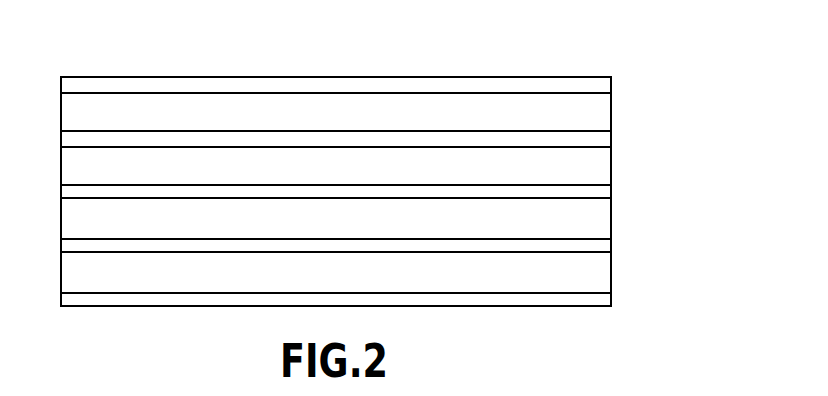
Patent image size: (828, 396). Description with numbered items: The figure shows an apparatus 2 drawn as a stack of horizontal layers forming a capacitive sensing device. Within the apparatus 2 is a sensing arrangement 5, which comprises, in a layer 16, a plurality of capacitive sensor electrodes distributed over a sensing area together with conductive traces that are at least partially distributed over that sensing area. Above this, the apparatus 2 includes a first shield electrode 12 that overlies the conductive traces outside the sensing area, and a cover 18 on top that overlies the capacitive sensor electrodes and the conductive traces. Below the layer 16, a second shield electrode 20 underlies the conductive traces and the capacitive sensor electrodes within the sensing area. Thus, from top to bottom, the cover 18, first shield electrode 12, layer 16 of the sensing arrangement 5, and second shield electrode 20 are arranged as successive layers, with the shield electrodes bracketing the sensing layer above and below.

The apparatus 2 is at (620, 72).
The sensing arrangement 5 is at (618, 184).
The first shield electrode 12 is at (61, 166).
The layer 16 is at (61, 215).
The cover 18 is at (61, 110).
The second shield electrode 20 is at (61, 268).